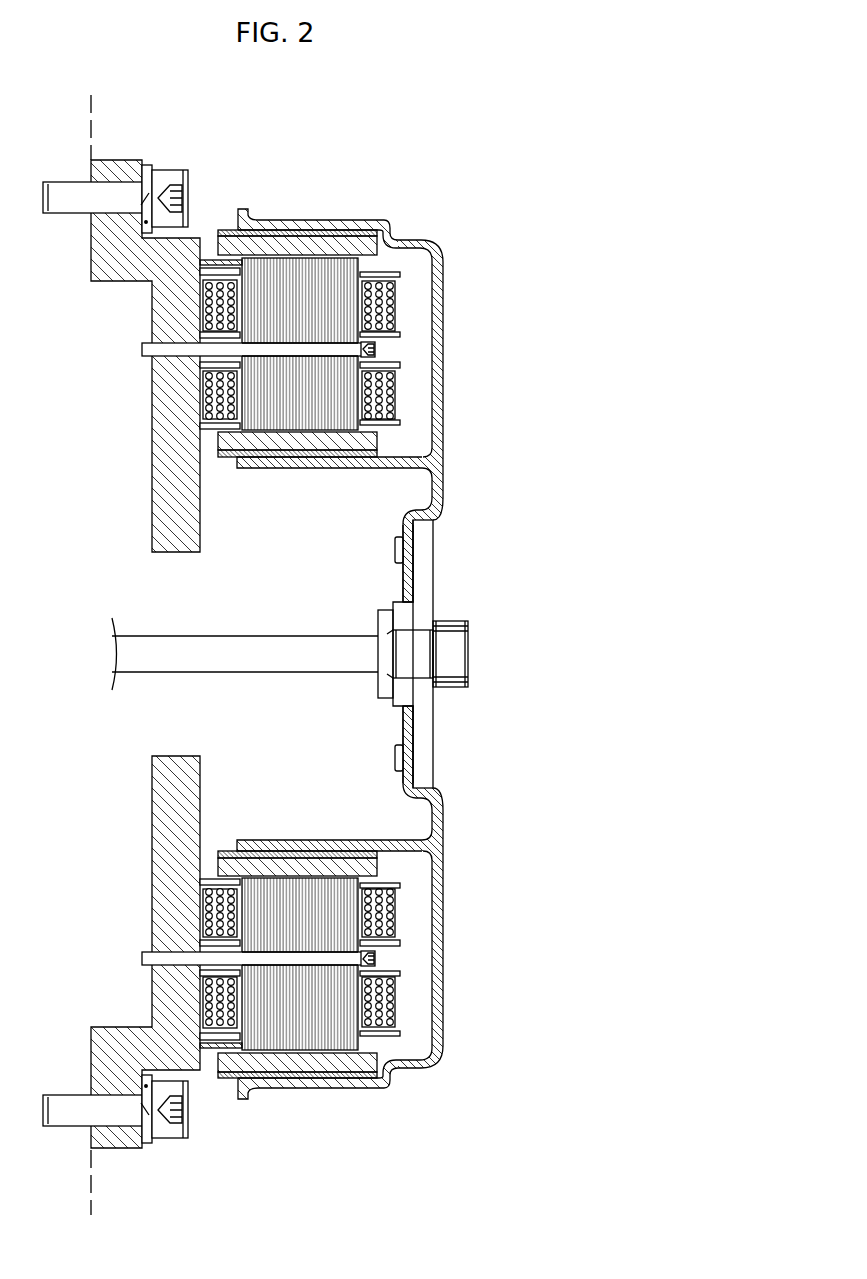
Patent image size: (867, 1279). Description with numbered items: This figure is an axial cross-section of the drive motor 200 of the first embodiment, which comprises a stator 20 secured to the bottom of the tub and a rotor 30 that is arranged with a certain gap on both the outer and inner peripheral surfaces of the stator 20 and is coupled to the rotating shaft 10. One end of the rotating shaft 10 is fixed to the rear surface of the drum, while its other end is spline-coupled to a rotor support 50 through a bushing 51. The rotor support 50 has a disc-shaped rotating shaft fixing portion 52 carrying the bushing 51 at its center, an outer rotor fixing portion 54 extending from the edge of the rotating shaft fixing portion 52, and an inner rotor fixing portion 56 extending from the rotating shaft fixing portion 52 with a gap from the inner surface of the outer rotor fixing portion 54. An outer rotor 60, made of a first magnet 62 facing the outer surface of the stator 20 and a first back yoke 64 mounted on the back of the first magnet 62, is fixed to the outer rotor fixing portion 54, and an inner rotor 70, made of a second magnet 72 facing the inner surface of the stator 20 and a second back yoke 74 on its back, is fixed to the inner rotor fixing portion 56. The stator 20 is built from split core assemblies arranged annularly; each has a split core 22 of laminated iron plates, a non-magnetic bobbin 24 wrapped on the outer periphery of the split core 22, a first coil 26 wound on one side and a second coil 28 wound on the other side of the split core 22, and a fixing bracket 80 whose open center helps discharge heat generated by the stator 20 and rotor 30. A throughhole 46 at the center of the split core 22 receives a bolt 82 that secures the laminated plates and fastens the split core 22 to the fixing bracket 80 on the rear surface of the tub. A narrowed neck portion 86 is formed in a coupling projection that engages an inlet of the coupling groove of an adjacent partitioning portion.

The rotating shaft 10 is at (190, 636).
The stator 20 is at (355, 647).
The split core 22 is at (340, 320).
The bobbin 24 is at (400, 274).
The first coil 26 is at (392, 293).
The second coil 28 is at (392, 376).
The rotor 30 is at (325, 210).
The throughhole 46 is at (270, 338).
The rotor support 50 is at (381, 632).
The bushing 51 is at (425, 542).
The rotating shaft fixing portion 52 is at (408, 587).
The outer rotor fixing portion 54 is at (368, 220).
The inner rotor fixing portion 56 is at (253, 463).
The outer rotor 60 is at (293, 588).
The first magnet 62 is at (228, 243).
The first back yoke 64 is at (220, 142).
The inner rotor 70 is at (297, 654).
The second magnet 72 is at (285, 445).
The second back yoke 74 is at (280, 513).
The fixing bracket 80 is at (162, 498).
The bolt 82 is at (298, 357).
The narrowed neck portion 86 is at (178, 357).
The drive motor 200 is at (483, 191).